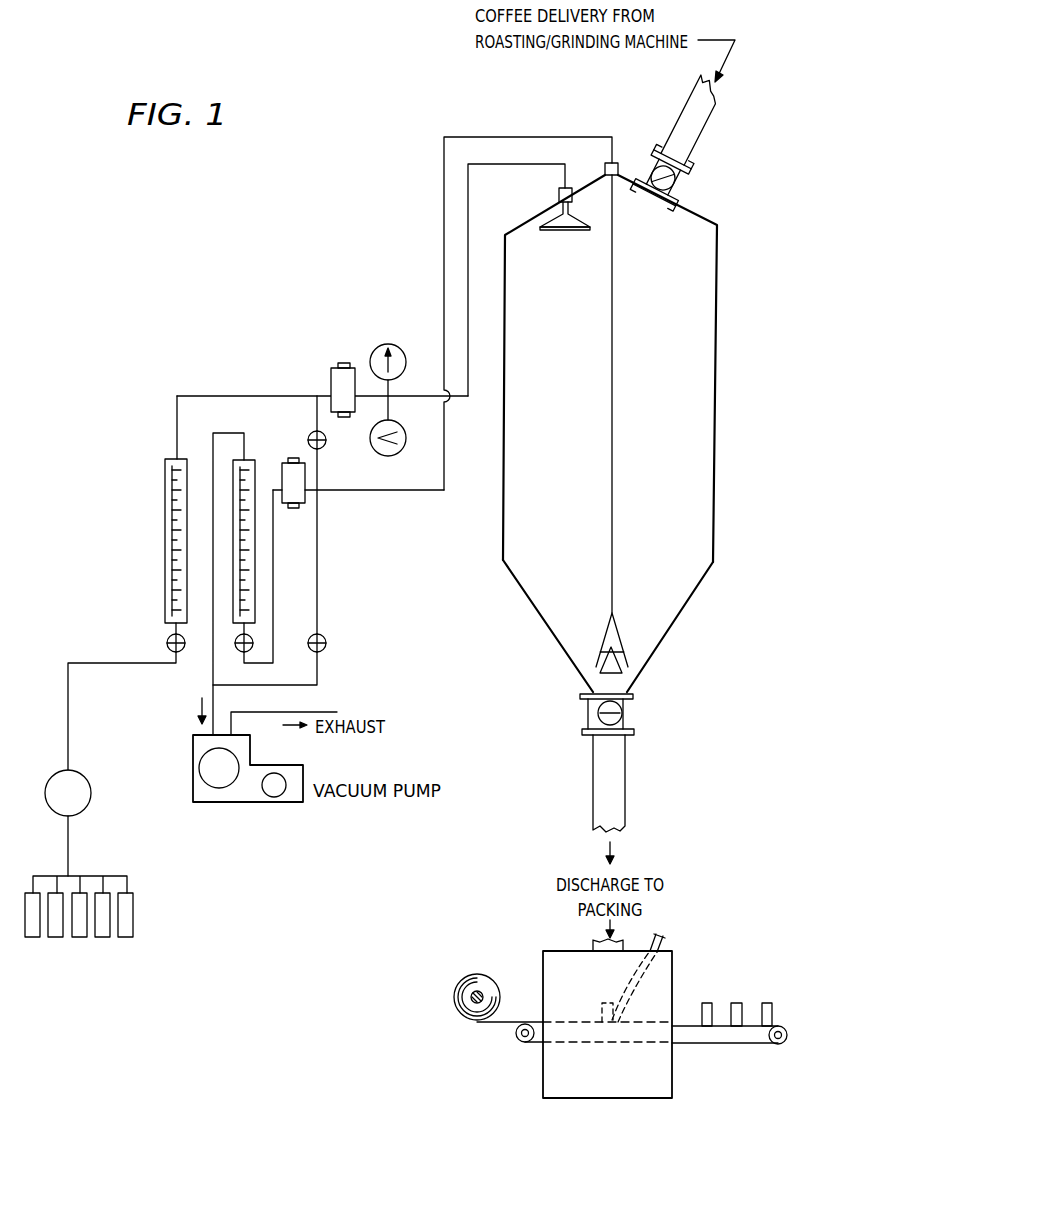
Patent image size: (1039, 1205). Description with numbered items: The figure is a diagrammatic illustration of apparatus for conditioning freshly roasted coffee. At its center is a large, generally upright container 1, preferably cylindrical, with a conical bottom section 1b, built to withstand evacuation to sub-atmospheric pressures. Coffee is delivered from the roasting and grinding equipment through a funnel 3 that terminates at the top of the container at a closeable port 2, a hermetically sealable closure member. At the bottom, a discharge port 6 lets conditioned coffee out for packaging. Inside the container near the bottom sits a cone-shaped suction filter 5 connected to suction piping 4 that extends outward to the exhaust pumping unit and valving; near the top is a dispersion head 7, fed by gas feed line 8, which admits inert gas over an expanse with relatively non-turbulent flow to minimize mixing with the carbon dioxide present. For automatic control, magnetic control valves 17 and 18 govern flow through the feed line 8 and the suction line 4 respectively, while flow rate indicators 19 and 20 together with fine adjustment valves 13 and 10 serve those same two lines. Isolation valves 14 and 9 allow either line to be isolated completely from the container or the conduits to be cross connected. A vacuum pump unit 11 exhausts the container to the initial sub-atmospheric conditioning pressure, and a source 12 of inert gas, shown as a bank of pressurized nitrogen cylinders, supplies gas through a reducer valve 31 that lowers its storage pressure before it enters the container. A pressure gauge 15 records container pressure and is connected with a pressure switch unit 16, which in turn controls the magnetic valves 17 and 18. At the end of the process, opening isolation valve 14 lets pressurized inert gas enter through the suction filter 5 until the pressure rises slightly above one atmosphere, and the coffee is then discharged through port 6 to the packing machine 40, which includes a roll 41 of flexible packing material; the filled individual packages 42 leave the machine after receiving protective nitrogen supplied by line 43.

The container 1 is at (716, 372).
The conical bottom section 1b is at (672, 628).
The closeable port 2 is at (680, 190).
The funnel 3 is at (682, 112).
The suction piping 4 is at (612, 411).
The suction filter 5 is at (614, 631).
The discharge port 6 is at (628, 713).
The dispersion head 7 is at (556, 230).
The gas feed line 8 is at (505, 165).
The isolation valve 9 is at (326, 640).
The fine adjustment valve 10 is at (242, 652).
The vacuum pump unit 11 is at (252, 757).
The source of inert gas 12 is at (134, 912).
The fine adjustment valve 13 is at (168, 637).
The isolation valve 14 is at (326, 446).
The pressure gauge 15 is at (397, 345).
The pressure switch unit 16 is at (400, 455).
The magnetic control valve 17 is at (338, 368).
The magnetic control valve 18 is at (288, 460).
The flow rate indicator 19 is at (168, 458).
The flow rate indicator 20 is at (236, 470).
The reducer valve 31 is at (91, 795).
The packing machine 40 is at (668, 990).
The roll 41 is at (458, 986).
The packages 42 is at (770, 1005).
The line 43 is at (664, 944).